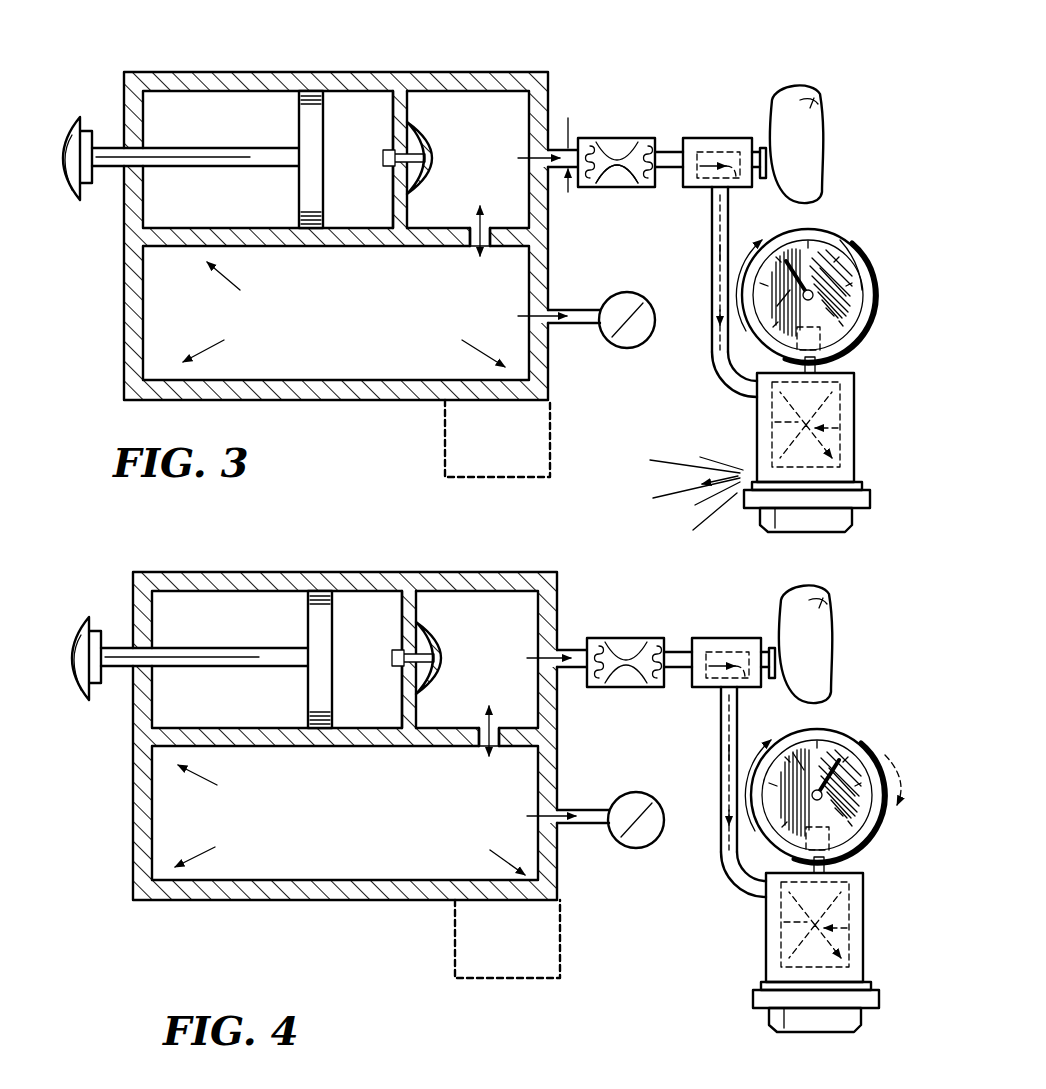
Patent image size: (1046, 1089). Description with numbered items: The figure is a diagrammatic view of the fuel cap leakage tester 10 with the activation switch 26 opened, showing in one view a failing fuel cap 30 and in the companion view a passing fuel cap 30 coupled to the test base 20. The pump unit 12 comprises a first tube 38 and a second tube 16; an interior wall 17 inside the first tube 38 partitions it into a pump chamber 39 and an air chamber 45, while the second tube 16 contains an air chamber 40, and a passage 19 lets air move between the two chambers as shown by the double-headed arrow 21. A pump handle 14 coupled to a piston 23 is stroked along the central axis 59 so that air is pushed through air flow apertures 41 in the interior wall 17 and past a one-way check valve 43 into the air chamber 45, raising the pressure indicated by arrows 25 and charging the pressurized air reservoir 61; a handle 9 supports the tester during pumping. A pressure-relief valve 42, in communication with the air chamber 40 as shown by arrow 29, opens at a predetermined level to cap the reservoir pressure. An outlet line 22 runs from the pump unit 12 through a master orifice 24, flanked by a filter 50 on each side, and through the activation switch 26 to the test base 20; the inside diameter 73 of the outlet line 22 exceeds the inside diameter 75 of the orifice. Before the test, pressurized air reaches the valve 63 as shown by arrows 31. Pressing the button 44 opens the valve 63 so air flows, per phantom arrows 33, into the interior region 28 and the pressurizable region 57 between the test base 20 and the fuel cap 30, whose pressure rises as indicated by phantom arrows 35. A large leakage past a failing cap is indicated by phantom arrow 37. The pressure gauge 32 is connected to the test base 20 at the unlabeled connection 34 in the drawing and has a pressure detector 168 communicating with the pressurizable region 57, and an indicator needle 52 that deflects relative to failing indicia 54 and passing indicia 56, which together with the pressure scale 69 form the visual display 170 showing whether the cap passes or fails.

In FIG. 3, the handle 9 is at (460, 447).
In FIG. 4, the handle 9 is at (484, 941).
In FIG. 3, the fuel cap leakage tester 10 is at (465, 70).
In FIG. 4, the fuel cap leakage tester 10 is at (486, 530).
In FIG. 3, the pump unit 12 is at (222, 66).
In FIG. 4, the pump unit 12 is at (345, 717).
In FIG. 3, the pump handle 14 is at (107, 150).
In FIG. 4, the pump handle 14 is at (177, 619).
In FIG. 3, the second tube 16 is at (123, 274).
In FIG. 4, the second tube 16 is at (345, 913).
In FIG. 3, the interior wall 17 is at (407, 110).
In FIG. 4, the interior wall 17 is at (434, 659).
In FIG. 3, the passage 19 is at (472, 240).
In FIG. 4, the passage 19 is at (476, 718).
In FIG. 3, the test base 20 is at (855, 438).
In FIG. 4, the test base 20 is at (796, 927).
In FIG. 3, the double-headed arrow 21 is at (482, 250).
In FIG. 4, the double-headed arrow 21 is at (513, 729).
In FIG. 3, the outlet line 22 is at (558, 172).
In FIG. 4, the outlet line 22 is at (669, 747).
In FIG. 3, the piston 23 is at (297, 130).
In FIG. 4, the piston 23 is at (295, 659).
In FIG. 3, the master orifice 24 is at (612, 138).
In FIG. 4, the master orifice 24 is at (625, 644).
In FIG. 3, the arrows 25 is at (202, 277).
In FIG. 4, the arrows 25 is at (350, 820).
In FIG. 3, the activation switch 26 is at (713, 138).
In FIG. 4, the activation switch 26 is at (726, 649).
In FIG. 3, the interior region 28 is at (770, 418).
In FIG. 4, the interior region 28 is at (780, 949).
In FIG. 3, the arrow 29 is at (523, 314).
In FIG. 4, the arrow 29 is at (552, 806).
In FIG. 3, the fuel cap 30 is at (755, 526).
In FIG. 4, the fuel cap 30 is at (786, 1010).
In FIG. 3, the arrows 31 is at (518, 158).
In FIG. 4, the arrows 31 is at (590, 683).
In FIG. 3, the pressure gauge 32 is at (794, 238).
In FIG. 4, the pressure gauge 32 is at (820, 826).
In FIG. 3, the phantom arrows 33 is at (716, 233).
In FIG. 4, the phantom arrows 33 is at (701, 787).
In FIG. 3, the gauge connection 34 is at (733, 375).
In FIG. 4, the gauge connection 34 is at (791, 861).
In FIG. 3, the phantom arrows 35 is at (772, 430).
In FIG. 4, the phantom arrows 35 is at (807, 927).
In FIG. 3, the phantom arrow 37 is at (740, 478).
In FIG. 3, the first tube 38 is at (258, 82).
In FIG. 4, the first tube 38 is at (345, 560).
In FIG. 3, the pump chamber 39 is at (361, 113).
In FIG. 4, the pump chamber 39 is at (389, 632).
In FIG. 3, the air chamber 40 is at (390, 364).
In FIG. 4, the air chamber 40 is at (301, 815).
In FIG. 3, the air flow apertures 41 is at (395, 146).
In FIG. 4, the air flow apertures 41 is at (389, 667).
In FIG. 3, the pressure-relief valve 42 is at (625, 293).
In FIG. 4, the pressure-relief valve 42 is at (632, 805).
In FIG. 3, the one-way check valve 43 is at (423, 173).
In FIG. 4, the one-way check valve 43 is at (447, 652).
In FIG. 3, the button 44 is at (800, 150).
In FIG. 4, the button 44 is at (792, 644).
In FIG. 3, the air chamber 45 is at (478, 114).
In FIG. 4, the air chamber 45 is at (481, 632).
In FIG. 3, the filter 50 is at (592, 146).
In FIG. 4, the filter 50 is at (626, 651).
In FIG. 3, the indicator needle 52 is at (814, 255).
In FIG. 4, the indicator needle 52 is at (817, 781).
In FIG. 3, the failing indicia 54 is at (776, 306).
In FIG. 4, the failing indicia 54 is at (774, 736).
In FIG. 3, the passing indicia 56 is at (816, 275).
In FIG. 4, the passing indicia 56 is at (861, 764).
In FIG. 3, the pressurizable region 57 is at (848, 424).
In FIG. 4, the pressurizable region 57 is at (844, 925).
In FIG. 3, the central axis 59 is at (38, 150).
In FIG. 4, the central axis 59 is at (70, 653).
In FIG. 3, the pressurized air reservoir 61 is at (338, 357).
In FIG. 4, the pressurized air reservoir 61 is at (345, 901).
In FIG. 3, the valve 63 is at (730, 150).
In FIG. 4, the valve 63 is at (731, 638).
In FIG. 3, the pressure scale 69 is at (861, 320).
In FIG. 4, the pressure scale 69 is at (846, 804).
In FIG. 3, the inside diameter 73 is at (577, 142).
In FIG. 3, the inside diameter 75 is at (604, 172).
In FIG. 3, the pressure detector 168 is at (822, 342).
In FIG. 4, the pressure detector 168 is at (860, 860).
In FIG. 3, the visual display 170 is at (820, 238).
In FIG. 4, the visual display 170 is at (894, 800).